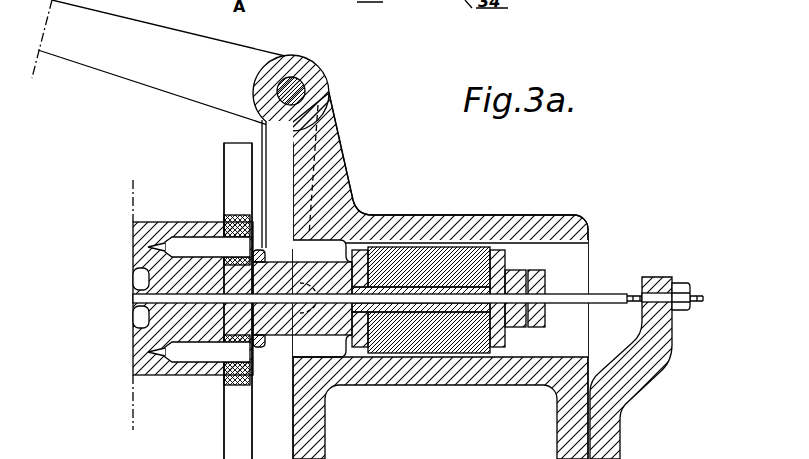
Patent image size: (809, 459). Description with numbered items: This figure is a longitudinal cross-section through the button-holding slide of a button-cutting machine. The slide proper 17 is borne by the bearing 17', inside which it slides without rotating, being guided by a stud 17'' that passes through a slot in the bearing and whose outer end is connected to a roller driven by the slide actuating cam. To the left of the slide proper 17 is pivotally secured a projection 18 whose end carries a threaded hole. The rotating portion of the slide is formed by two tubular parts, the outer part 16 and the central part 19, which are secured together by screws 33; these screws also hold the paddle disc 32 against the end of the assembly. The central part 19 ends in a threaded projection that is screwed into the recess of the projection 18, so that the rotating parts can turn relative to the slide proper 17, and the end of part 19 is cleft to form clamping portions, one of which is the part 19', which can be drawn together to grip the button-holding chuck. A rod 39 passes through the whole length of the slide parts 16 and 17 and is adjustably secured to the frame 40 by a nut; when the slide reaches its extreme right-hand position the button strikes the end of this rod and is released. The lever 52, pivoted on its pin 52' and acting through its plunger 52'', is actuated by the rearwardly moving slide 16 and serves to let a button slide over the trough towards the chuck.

The outer tubular part of the rotating slide 16 is at (183, 230).
The slide proper 17 is at (429, 220).
The bearing 17' is at (435, 276).
The stud 17'' is at (429, 367).
The projection 18 is at (363, 214).
The central part of the rotating slide 19 is at (151, 270).
The cleft end part of part 19 19' is at (318, 336).
The paddle disc 32 is at (230, 417).
The screws 33 is at (187, 353).
The rod 39 is at (604, 299).
The frame 40 is at (659, 286).
The lever 52 is at (158, 65).
The pivot pin 52' is at (314, 76).
The plunger 52'' is at (320, 289).